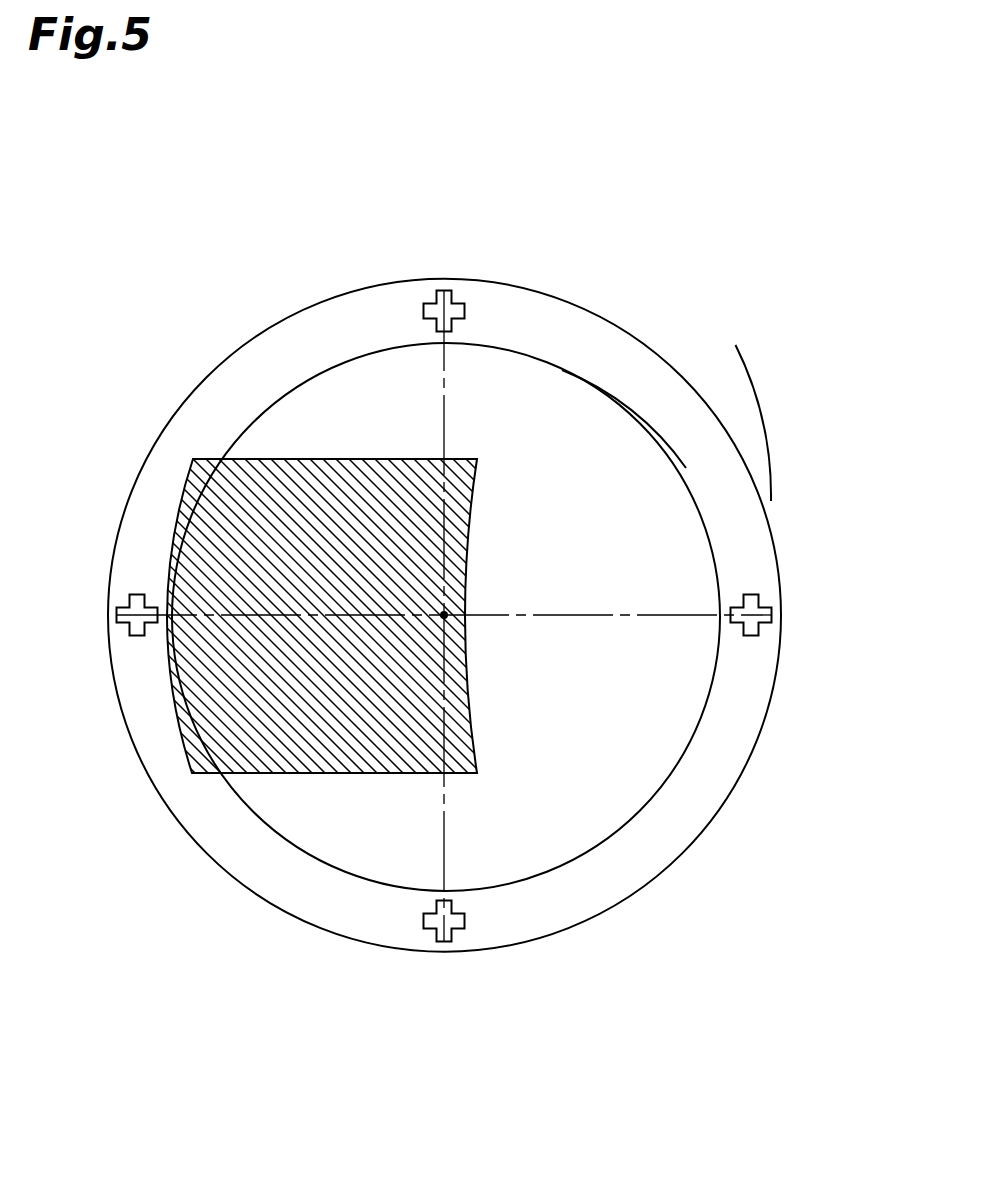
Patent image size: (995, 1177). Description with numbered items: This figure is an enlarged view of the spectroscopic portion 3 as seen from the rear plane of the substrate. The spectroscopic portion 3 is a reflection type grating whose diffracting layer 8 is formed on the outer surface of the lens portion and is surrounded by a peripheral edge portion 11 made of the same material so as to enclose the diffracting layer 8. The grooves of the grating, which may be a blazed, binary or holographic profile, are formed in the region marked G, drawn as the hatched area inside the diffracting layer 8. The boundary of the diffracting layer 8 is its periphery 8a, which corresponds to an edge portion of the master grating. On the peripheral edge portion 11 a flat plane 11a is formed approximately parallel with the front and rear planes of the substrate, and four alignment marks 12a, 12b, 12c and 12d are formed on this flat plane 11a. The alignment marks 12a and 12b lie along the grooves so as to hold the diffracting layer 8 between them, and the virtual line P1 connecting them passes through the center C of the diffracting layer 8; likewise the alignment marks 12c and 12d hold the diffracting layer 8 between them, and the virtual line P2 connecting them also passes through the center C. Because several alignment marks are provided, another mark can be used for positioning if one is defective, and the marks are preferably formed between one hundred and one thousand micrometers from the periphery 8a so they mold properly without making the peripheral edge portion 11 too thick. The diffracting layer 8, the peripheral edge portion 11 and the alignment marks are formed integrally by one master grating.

The spectroscopic portion 3 is at (784, 208).
The diffracting layer 8 is at (592, 437).
The periphery of the diffracting layer 8a is at (627, 407).
The peripheral edge portion 11 is at (706, 400).
The flat plane 11a is at (725, 478).
The alignment mark 12a is at (770, 613).
The alignment mark 12b is at (125, 614).
The alignment mark 12c is at (442, 296).
The alignment mark 12d is at (445, 936).
The groove region G is at (355, 457).
The center of the diffracting layer C is at (447, 612).
The virtual line P1 is at (625, 617).
The virtual line P2 is at (445, 410).